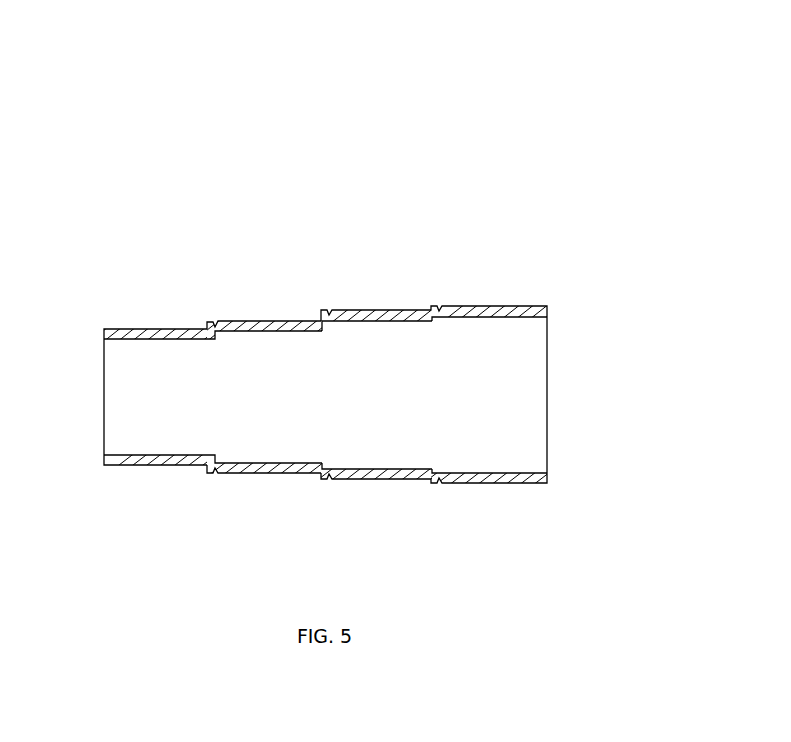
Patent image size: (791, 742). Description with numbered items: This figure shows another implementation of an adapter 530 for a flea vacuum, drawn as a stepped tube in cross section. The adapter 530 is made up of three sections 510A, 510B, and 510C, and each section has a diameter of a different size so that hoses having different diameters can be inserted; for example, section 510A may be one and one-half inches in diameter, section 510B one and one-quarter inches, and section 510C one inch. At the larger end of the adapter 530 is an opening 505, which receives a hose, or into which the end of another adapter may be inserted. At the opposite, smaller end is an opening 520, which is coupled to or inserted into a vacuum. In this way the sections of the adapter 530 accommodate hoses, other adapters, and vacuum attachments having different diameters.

The adapter 530 is at (228, 97).
The opening 505 is at (557, 409).
The opening 520 is at (102, 393).
The section 510C is at (285, 352).
The section 510B is at (393, 345).
The section 510A is at (503, 328).